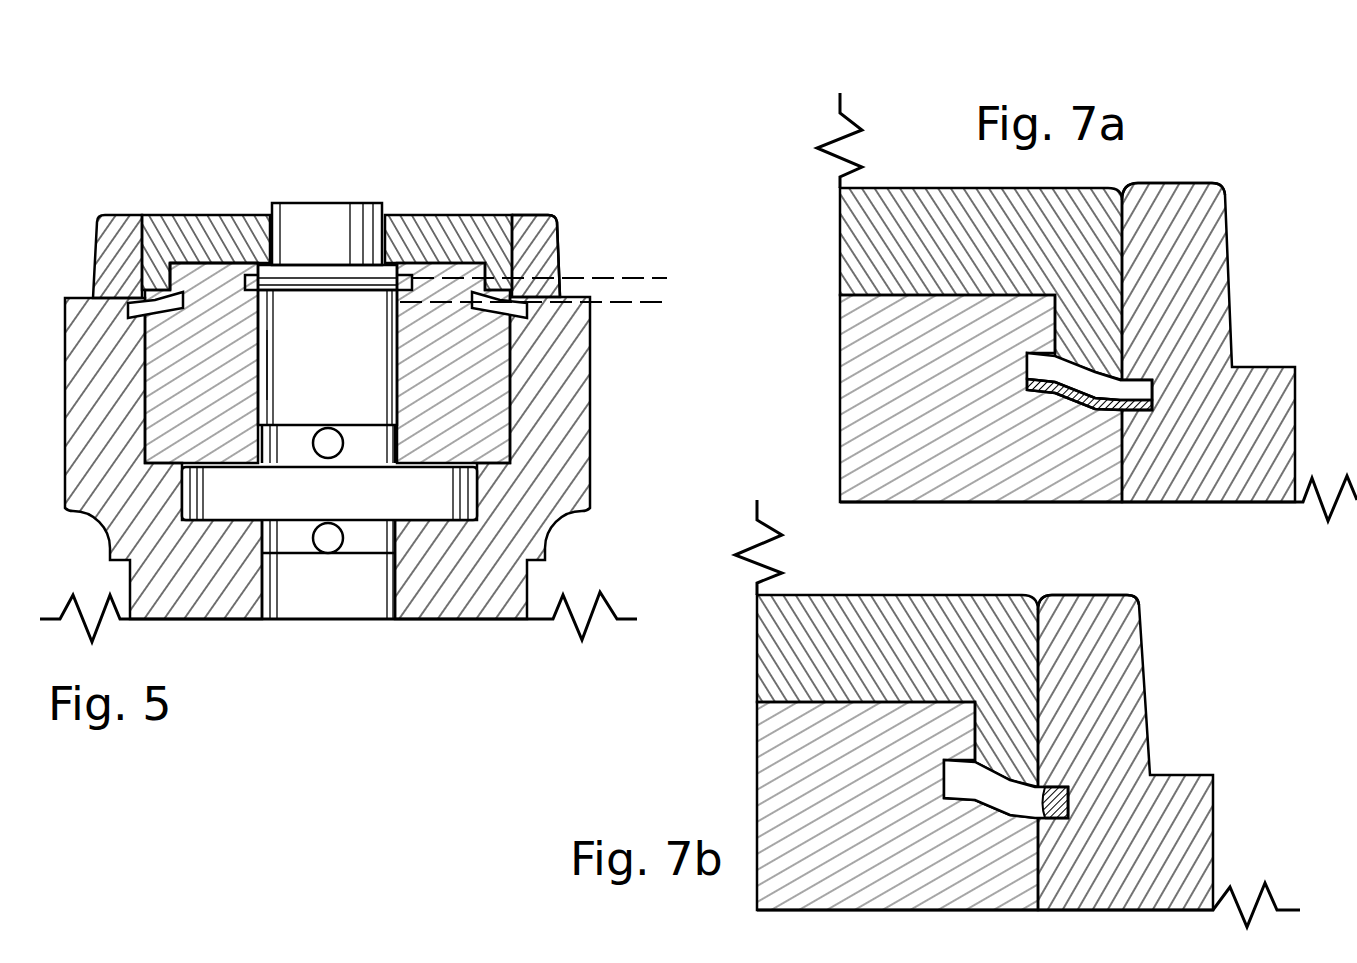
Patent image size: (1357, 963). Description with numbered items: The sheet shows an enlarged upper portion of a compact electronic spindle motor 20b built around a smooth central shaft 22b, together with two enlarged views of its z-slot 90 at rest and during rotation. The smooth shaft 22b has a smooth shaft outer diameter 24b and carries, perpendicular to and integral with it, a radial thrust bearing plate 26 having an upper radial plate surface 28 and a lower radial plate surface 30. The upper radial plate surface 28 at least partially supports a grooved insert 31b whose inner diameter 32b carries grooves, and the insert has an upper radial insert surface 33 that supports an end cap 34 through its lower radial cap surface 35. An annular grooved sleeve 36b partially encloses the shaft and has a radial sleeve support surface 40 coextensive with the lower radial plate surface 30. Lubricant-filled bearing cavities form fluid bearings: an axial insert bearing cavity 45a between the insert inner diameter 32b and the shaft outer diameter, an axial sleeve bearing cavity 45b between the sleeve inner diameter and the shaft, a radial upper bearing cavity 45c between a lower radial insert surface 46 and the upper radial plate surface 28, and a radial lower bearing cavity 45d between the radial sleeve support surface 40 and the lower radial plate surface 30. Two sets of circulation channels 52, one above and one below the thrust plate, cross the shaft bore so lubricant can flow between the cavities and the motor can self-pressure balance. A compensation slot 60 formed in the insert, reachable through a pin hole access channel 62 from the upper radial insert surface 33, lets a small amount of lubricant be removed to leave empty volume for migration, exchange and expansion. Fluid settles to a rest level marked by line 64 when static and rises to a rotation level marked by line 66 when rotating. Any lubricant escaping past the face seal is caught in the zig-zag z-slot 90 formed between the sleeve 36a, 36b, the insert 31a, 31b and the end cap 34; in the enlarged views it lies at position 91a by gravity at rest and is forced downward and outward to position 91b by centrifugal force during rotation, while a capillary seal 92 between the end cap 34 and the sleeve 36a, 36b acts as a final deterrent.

In FIG. 5, the compact electronic spindle motor 20b is at (298, 104).
In FIG. 5, the smooth central shaft 22b is at (313, 203).
In FIG. 5, the smooth shaft outer diameter 24b is at (400, 327).
In FIG. 5, the radial thrust bearing plate 26 is at (487, 487).
In FIG. 5, the upper radial plate surface 28 is at (183, 470).
In FIG. 5, the lower radial plate surface 30 is at (227, 523).
In FIG. 7A, the insert 31a is at (981, 398).
In FIG. 7B, the insert 31a is at (897, 806).
In FIG. 5, the grooved insert 31b is at (492, 407).
In FIG. 7A, the grooved insert 31b is at (958, 379).
In FIG. 7B, the grooved insert 31b is at (877, 790).
In FIG. 5, the inner diameter of the insert 32b is at (263, 363).
In FIG. 5, the upper radial insert surface 33 is at (195, 262).
In FIG. 5, the end cap 34 is at (158, 230).
In FIG. 7A, the end cap 34 is at (897, 225).
In FIG. 7B, the end cap 34 is at (815, 630).
In FIG. 5, the lower radial cap surface 35 is at (203, 280).
In FIG. 7A, the sleeve 36a is at (1230, 342).
In FIG. 7B, the sleeve 36a is at (1147, 752).
In FIG. 5, the grooved sleeve 36b is at (555, 413).
In FIG. 7A, the grooved sleeve 36b is at (1192, 273).
In FIG. 7B, the grooved sleeve 36b is at (1108, 680).
In FIG. 5, the radial sleeve support surface 40 is at (460, 488).
In FIG. 5, the axial insert bearing cavity 45a is at (260, 387).
In FIG. 5, the axial sleeve bearing cavity 45b is at (260, 608).
In FIG. 5, the radial upper bearing cavity 45c is at (210, 463).
In FIG. 5, the radial lower bearing cavity 45d is at (397, 590).
In FIG. 5, the lower radial insert surface 46 is at (413, 468).
In FIG. 5, the circulation channels 52 is at (323, 535).
In FIG. 5, the compensation slot 60 is at (405, 272).
In FIG. 5, the pin hole access channel 62 is at (246, 275).
In FIG. 5, the rest level line 64 is at (622, 302).
In FIG. 5, the rotation level line 66 is at (612, 278).
In FIG. 5, the z-slot 90 is at (136, 298).
In FIG. 7A, the z-slot 90 is at (1130, 393).
In FIG. 7B, the z-slot 90 is at (1020, 790).
In FIG. 7A, the lubricating fluid position at rest 91a is at (1135, 392).
In FIG. 7B, the lubricating fluid position during rotation 91b is at (1045, 797).
In FIG. 5, the capillary seal 92 is at (513, 253).
In FIG. 7A, the capillary seal 92 is at (1123, 223).
In FIG. 7B, the capillary seal 92 is at (1040, 650).